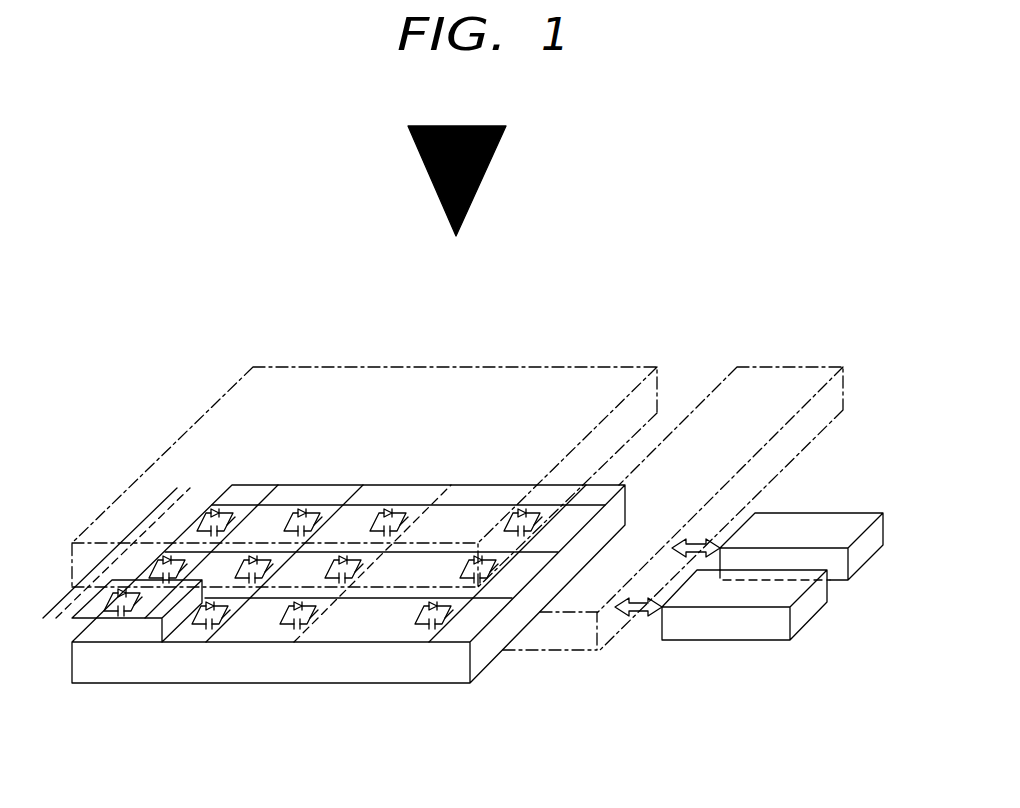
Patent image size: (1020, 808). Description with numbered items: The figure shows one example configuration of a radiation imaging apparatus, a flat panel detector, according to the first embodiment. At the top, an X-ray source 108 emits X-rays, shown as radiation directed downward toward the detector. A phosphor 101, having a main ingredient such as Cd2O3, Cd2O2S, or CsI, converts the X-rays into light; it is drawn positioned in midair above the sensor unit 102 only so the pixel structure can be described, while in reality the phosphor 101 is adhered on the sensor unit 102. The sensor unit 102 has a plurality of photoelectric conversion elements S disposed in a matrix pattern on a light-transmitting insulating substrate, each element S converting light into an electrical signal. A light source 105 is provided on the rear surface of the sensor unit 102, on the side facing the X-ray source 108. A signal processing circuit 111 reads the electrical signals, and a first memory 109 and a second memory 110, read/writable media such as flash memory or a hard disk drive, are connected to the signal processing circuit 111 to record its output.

The phosphor 101 is at (267, 378).
The sensor unit 102 is at (112, 550).
The light source 105 is at (287, 673).
The photoelectric conversion element S is at (103, 635).
The X-ray source 108 is at (487, 173).
The first memory 109 is at (802, 615).
The second memory 110 is at (863, 552).
The signal processing circuit 111 is at (757, 378).